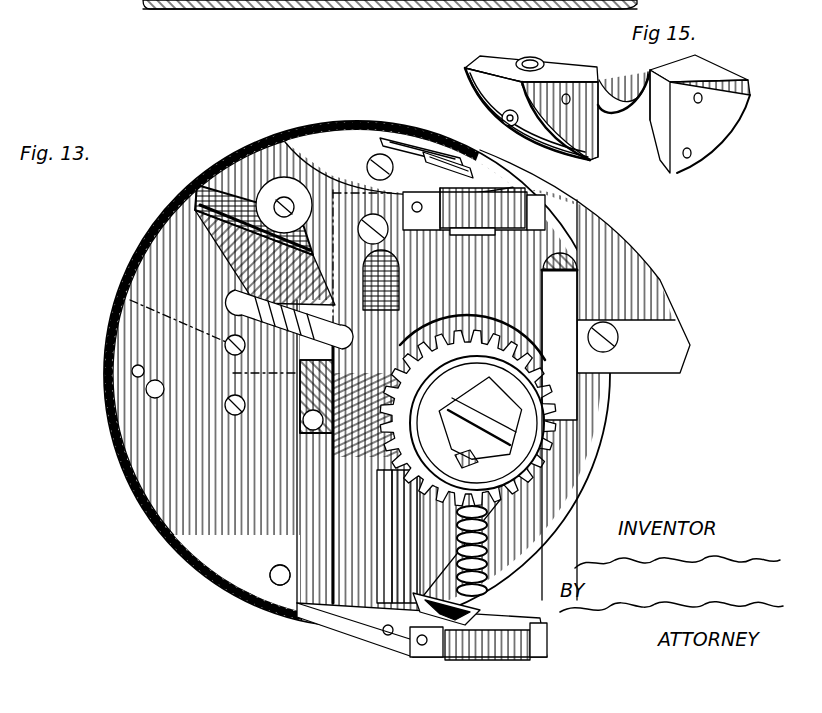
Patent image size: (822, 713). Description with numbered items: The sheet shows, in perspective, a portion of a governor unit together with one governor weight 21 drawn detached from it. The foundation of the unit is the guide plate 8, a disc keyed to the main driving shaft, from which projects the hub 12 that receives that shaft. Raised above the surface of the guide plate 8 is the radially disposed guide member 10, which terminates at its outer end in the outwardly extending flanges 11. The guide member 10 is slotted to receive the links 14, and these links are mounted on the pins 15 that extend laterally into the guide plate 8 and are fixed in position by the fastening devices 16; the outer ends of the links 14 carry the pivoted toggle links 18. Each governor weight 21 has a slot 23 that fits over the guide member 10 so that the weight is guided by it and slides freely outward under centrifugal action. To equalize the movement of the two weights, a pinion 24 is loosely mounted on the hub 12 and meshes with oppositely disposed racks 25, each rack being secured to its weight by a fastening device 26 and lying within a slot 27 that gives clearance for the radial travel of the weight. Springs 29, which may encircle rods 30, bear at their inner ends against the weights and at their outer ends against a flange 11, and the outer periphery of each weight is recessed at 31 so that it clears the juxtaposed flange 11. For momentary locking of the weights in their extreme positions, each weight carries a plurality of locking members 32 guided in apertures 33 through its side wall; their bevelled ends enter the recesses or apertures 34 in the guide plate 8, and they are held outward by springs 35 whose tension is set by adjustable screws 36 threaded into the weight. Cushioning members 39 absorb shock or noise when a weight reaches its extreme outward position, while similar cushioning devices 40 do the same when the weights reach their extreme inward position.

In FIG. 13, the guide plate 8 is at (545, 485).
In FIG. 13, the guide member 10 is at (310, 562).
In FIG. 13, the flanges 11 is at (500, 205).
In FIG. 15, the flanges 11 is at (540, 140).
In FIG. 13, the hub 12 is at (540, 450).
In FIG. 13, the links 14 is at (395, 140).
In FIG. 13, the pins 15 is at (313, 420).
In FIG. 13, the fastening devices 16 is at (330, 440).
In FIG. 13, the toggle links 18 is at (420, 170).
In FIG. 13, the governor weights 21 is at (565, 270).
In FIG. 15, the governor weights 21 is at (705, 72).
In FIG. 15, the slot 23 is at (660, 160).
In FIG. 13, the pinion 24 is at (520, 580).
In FIG. 13, the racks 25 is at (580, 432).
In FIG. 13, the fastening device 26 is at (625, 325).
In FIG. 13, the slot 27 is at (385, 320).
In FIG. 13, the springs 29 is at (490, 555).
In FIG. 13, the rods 30 is at (345, 135).
In FIG. 13, the recess 31 is at (515, 220).
In FIG. 15, the recess 31 is at (590, 160).
In FIG. 13, the locking members 32 is at (245, 320).
In FIG. 15, the locking members 32 is at (568, 97).
In FIG. 13, the apertures 33 is at (365, 285).
In FIG. 13, the recesses or apertures 34 is at (260, 300).
In FIG. 13, the springs 35 is at (262, 340).
In FIG. 13, the adjustable screws 36 is at (616, 342).
In FIG. 13, the cushioning members 39 is at (284, 190).
In FIG. 15, the cushioning members 39 is at (503, 115).
In FIG. 15, the cushioning devices 40 is at (525, 58).